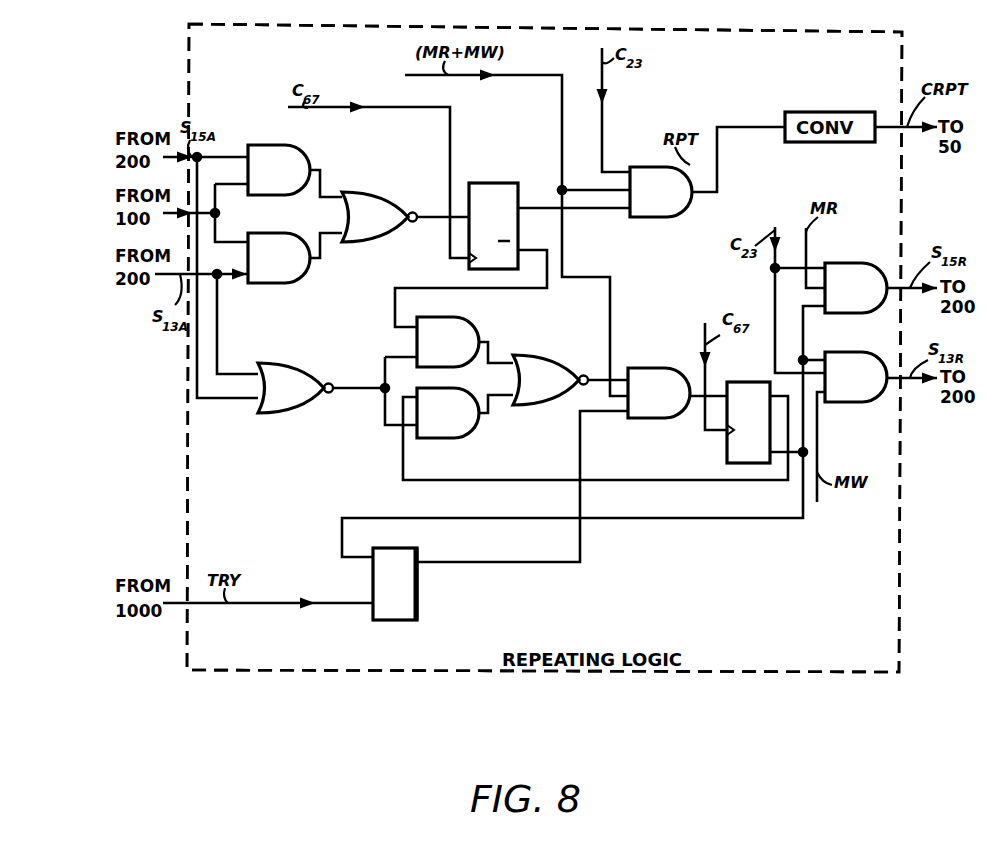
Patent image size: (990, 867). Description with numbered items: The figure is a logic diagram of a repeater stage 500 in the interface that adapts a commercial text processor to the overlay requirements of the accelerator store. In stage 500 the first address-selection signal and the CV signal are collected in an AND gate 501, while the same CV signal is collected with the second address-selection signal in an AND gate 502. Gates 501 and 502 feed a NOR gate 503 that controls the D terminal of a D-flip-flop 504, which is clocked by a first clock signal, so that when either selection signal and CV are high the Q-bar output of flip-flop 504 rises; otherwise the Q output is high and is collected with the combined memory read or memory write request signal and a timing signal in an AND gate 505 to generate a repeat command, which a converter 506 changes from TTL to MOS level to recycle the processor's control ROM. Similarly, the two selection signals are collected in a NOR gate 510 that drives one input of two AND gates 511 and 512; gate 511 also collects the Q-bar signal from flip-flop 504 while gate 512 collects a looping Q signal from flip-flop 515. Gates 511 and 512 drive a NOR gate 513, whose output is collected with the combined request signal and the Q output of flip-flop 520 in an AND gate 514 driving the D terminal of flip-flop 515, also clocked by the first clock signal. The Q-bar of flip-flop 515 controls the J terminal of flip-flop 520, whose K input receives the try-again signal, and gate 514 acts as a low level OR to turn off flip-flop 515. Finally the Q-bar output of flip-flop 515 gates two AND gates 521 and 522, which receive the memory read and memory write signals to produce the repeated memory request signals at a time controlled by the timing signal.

The repeater stage 500 is at (372, 670).
The AND gate 501 is at (302, 149).
The AND gate 502 is at (296, 233).
The NOR gate 503 is at (376, 192).
The D-flip-flop 504 is at (496, 183).
The AND gate 505 is at (635, 165).
The converter 506 is at (825, 112).
The NOR gate 510 is at (305, 363).
The AND gate 511 is at (475, 317).
The AND gate 512 is at (475, 438).
The NOR gate 513 is at (547, 355).
The AND gate 514 is at (658, 368).
The flip-flop 515 is at (742, 382).
The flip-flop 520 is at (438, 545).
The AND gate 521 is at (856, 263).
The AND gate 522 is at (860, 403).